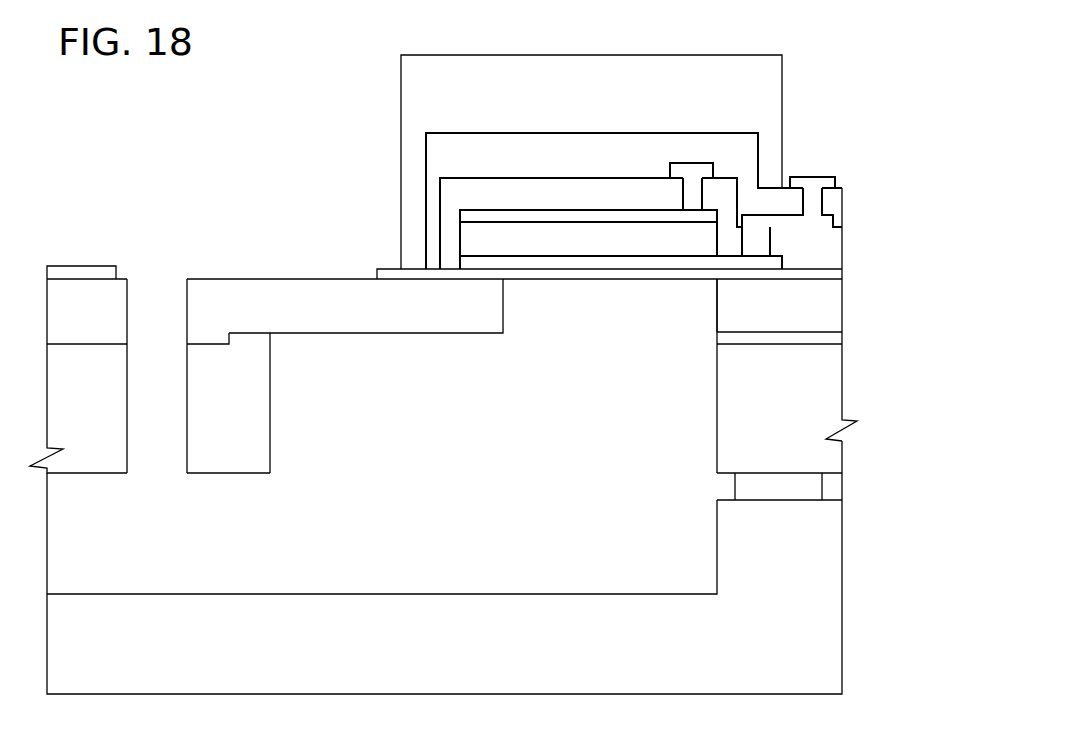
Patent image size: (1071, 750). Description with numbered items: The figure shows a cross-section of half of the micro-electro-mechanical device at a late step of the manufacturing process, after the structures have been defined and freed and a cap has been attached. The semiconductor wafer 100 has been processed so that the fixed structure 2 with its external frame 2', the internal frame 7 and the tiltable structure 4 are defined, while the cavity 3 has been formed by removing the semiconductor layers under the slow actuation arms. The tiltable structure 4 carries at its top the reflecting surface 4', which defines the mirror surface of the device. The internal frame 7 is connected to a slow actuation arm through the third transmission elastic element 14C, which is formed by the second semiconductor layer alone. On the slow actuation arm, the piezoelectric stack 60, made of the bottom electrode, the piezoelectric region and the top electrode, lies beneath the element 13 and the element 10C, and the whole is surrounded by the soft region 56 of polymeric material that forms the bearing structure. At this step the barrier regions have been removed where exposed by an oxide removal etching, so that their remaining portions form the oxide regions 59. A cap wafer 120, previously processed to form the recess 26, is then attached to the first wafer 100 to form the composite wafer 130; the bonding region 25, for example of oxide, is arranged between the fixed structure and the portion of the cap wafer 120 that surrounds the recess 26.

The fixed structure 2 is at (473, 567).
The external frame 2' is at (815, 333).
The cavity 3 is at (479, 434).
The tiltable structure 4 is at (78, 400).
The reflecting surface 4' is at (87, 231).
The internal frame 7 is at (227, 427).
The piezoelectric element 10C is at (571, 247).
The protective film 13 is at (448, 128).
The third transmission elastic element 14C is at (332, 308).
The bonding region 25 is at (811, 486).
The recess 26 is at (288, 548).
The soft region 56 is at (508, 78).
The oxide regions 59 is at (725, 338).
The piezoelectric stack 60 is at (457, 237).
The semiconductor wafer 100 is at (293, 222).
The cap wafer 120 is at (820, 632).
The composite wafer 130 is at (880, 254).